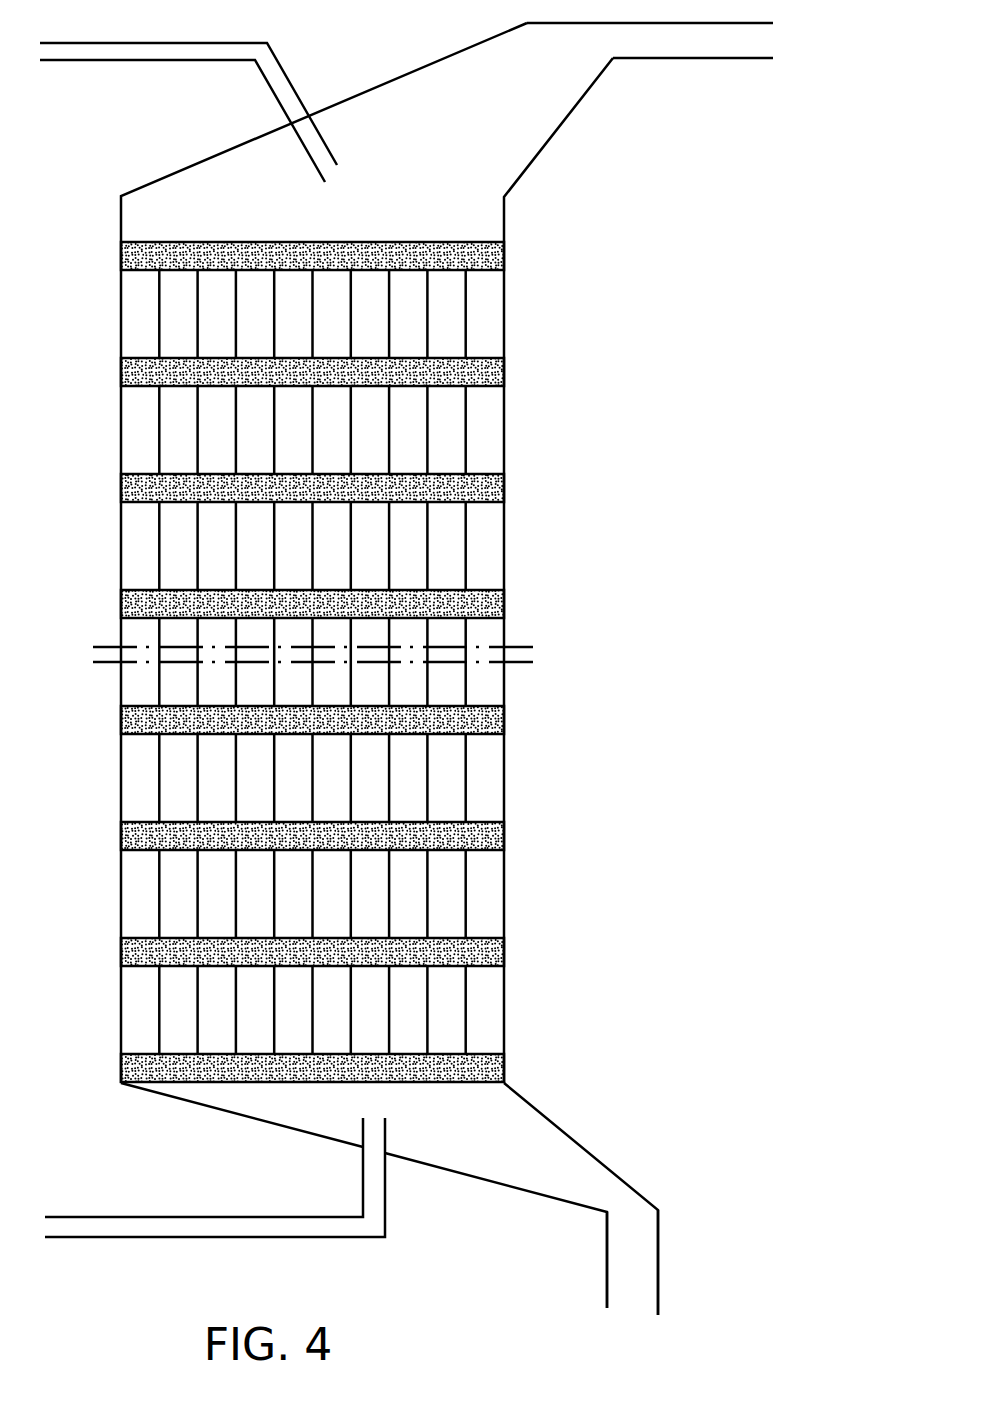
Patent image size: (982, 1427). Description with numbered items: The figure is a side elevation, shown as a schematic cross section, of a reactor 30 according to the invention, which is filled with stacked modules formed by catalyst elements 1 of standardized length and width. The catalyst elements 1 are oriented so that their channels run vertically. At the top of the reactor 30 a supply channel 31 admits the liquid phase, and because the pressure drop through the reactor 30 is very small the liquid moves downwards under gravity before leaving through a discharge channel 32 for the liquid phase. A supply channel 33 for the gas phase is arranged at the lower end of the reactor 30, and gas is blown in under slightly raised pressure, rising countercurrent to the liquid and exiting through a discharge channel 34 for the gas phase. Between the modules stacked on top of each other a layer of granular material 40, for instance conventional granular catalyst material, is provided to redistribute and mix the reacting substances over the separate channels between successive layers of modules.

The catalyst element 1 is at (485, 1020).
The reactor 30 is at (540, 443).
The supply channel for the liquid phase 31 is at (108, 60).
The discharge channel for the liquid phase 32 is at (590, 1152).
The supply channel for the gas phase 33 is at (157, 1215).
The discharge channel for the gas phase 34 is at (657, 58).
The layer of granular material 40 is at (142, 838).